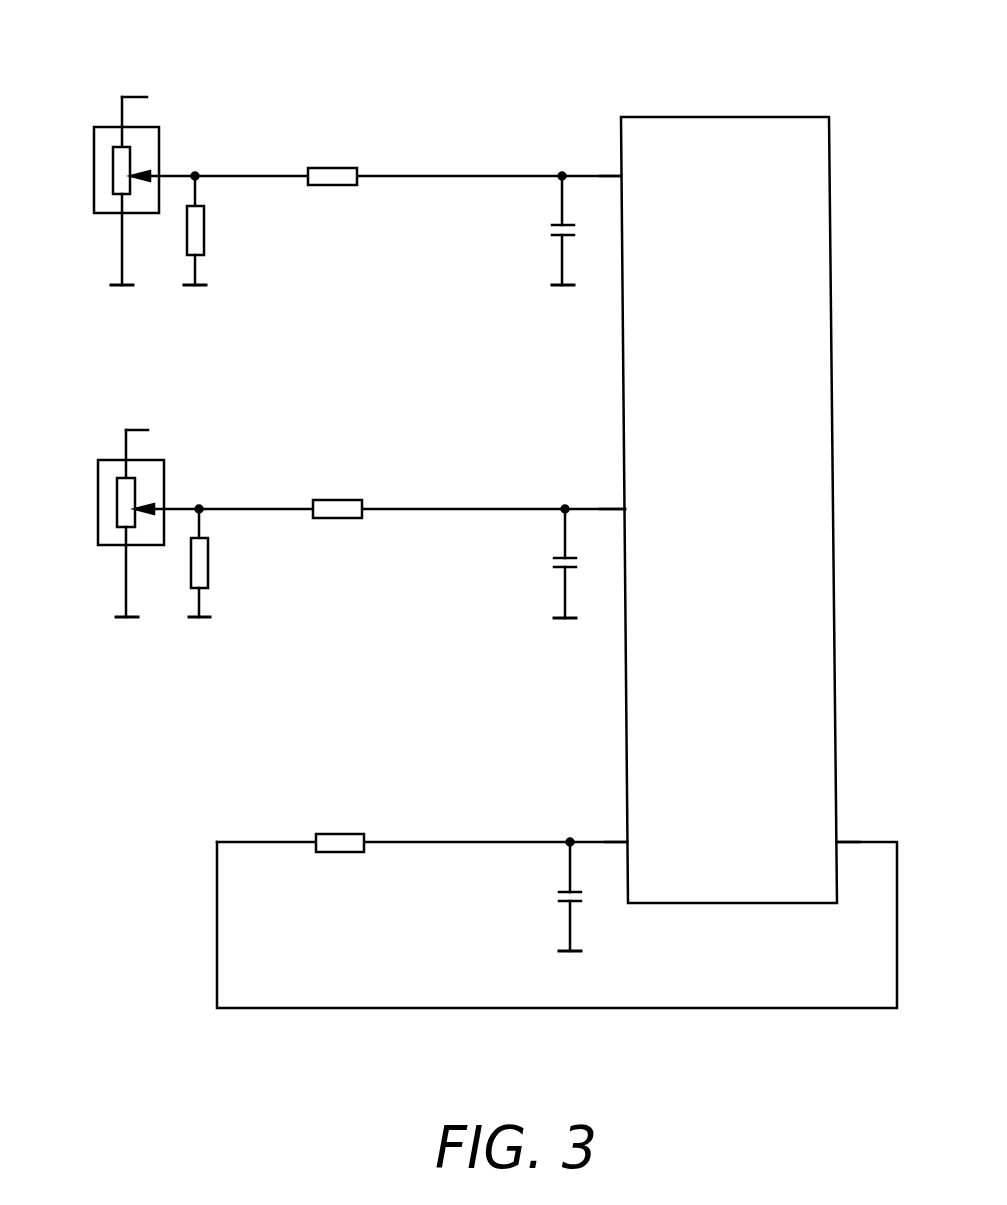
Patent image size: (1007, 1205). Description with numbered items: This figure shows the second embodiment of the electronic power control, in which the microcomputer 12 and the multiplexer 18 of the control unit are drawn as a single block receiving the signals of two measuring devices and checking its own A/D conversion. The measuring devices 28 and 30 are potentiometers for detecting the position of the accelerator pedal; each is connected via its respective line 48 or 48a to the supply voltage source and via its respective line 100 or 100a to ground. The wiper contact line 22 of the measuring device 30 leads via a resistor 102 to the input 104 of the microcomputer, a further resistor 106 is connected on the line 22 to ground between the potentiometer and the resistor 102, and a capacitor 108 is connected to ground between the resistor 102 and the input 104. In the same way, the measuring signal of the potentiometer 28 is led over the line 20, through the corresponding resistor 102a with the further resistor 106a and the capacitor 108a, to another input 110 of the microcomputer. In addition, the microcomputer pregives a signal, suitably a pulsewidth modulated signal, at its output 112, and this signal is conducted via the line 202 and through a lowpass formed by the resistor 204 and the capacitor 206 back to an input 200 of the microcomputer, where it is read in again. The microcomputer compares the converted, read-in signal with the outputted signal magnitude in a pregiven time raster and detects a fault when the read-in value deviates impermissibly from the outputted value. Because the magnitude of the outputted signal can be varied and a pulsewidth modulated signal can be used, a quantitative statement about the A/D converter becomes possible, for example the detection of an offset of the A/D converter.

The microcomputer 12 is at (729, 461).
The multiplexer 18 is at (783, 118).
The input line 20 is at (442, 508).
The wiper contact line 22 is at (470, 175).
The measuring device 28 is at (155, 467).
The measuring device 30 is at (148, 133).
The supply line 48 is at (136, 97).
The supply line 48a is at (138, 430).
The ground line 100 is at (122, 247).
The ground line 100a is at (126, 582).
The resistor 102 is at (340, 170).
The resistor 102a is at (342, 507).
The input 104 is at (618, 177).
The further resistor 106 is at (204, 230).
The further resistor 106a is at (209, 560).
The capacitor 108 is at (558, 242).
The capacitor 108a is at (560, 573).
The input 110 is at (620, 508).
The output 112 is at (838, 842).
The input 200 is at (627, 842).
The line 202 is at (897, 940).
The resistor 204 is at (345, 838).
The capacitor 206 is at (562, 903).